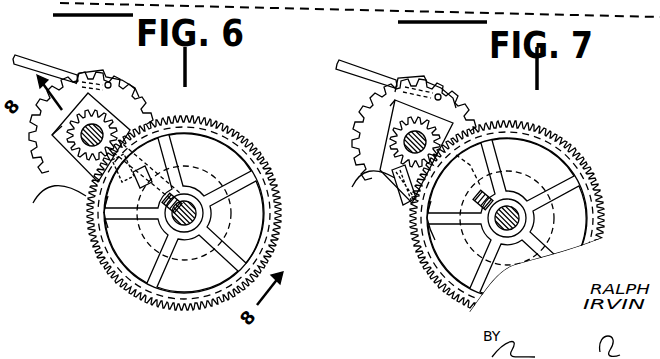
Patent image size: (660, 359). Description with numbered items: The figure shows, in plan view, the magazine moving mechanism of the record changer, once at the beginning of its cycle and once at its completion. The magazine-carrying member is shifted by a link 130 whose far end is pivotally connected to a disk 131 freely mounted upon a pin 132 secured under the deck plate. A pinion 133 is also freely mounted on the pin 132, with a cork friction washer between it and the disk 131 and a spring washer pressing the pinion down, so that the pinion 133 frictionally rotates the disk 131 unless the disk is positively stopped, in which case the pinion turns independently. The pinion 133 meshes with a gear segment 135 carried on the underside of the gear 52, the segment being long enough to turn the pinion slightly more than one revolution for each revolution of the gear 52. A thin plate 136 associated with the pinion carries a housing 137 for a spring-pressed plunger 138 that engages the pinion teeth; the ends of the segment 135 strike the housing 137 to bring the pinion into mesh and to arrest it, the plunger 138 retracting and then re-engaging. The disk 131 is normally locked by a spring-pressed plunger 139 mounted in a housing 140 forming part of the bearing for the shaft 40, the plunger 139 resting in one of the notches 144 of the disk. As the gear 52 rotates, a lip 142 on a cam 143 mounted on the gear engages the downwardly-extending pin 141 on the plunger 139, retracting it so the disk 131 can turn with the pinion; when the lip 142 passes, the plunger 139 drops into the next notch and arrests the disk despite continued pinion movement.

In FIG. 6, the shaft 40 is at (280, 185).
In FIG. 7, the shaft 40 is at (535, 266).
In FIG. 6, the gear 52 is at (248, 143).
In FIG. 7, the gear 52 is at (570, 148).
In FIG. 6, the link 130 is at (43, 70).
In FIG. 7, the link 130 is at (357, 68).
In FIG. 6, the disk 131 is at (47, 173).
In FIG. 7, the disk 131 is at (372, 122).
In FIG. 6, the pin 132 is at (100, 132).
In FIG. 7, the pin 132 is at (403, 142).
In FIG. 6, the pinion 133 is at (75, 180).
In FIG. 7, the pinion 133 is at (428, 122).
In FIG. 6, the gear segment 135 is at (113, 258).
In FIG. 7, the gear segment 135 is at (507, 137).
In FIG. 6, the thin plate 136 is at (55, 134).
In FIG. 7, the thin plate 136 is at (390, 106).
In FIG. 6, the housing 137 is at (107, 213).
In FIG. 7, the housing 137 is at (412, 203).
In FIG. 6, the spring-pressed plunger 138 is at (118, 125).
In FIG. 7, the spring-pressed plunger 138 is at (388, 195).
In FIG. 6, the spring-pressed plunger 139 is at (110, 228).
In FIG. 7, the spring-pressed plunger 139 is at (435, 240).
In FIG. 6, the housing 140 is at (162, 128).
In FIG. 7, the housing 140 is at (483, 165).
In FIG. 6, the pin 141 is at (183, 165).
In FIG. 7, the pin 141 is at (490, 170).
In FIG. 6, the lip 142 is at (140, 283).
In FIG. 7, the lip 142 is at (590, 204).
In FIG. 6, the cam 143 is at (218, 220).
In FIG. 7, the cam 143 is at (540, 224).
In FIG. 6, the notches 144 is at (103, 72).
In FIG. 7, the notches 144 is at (437, 77).